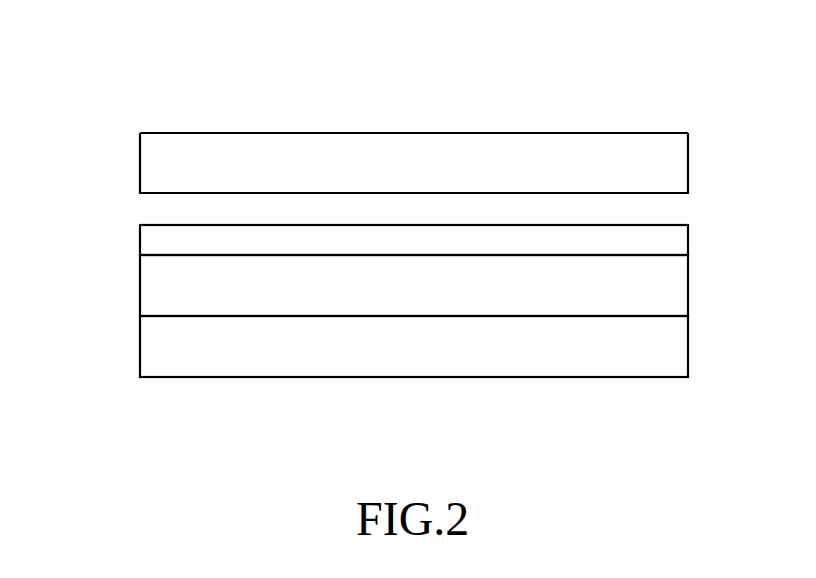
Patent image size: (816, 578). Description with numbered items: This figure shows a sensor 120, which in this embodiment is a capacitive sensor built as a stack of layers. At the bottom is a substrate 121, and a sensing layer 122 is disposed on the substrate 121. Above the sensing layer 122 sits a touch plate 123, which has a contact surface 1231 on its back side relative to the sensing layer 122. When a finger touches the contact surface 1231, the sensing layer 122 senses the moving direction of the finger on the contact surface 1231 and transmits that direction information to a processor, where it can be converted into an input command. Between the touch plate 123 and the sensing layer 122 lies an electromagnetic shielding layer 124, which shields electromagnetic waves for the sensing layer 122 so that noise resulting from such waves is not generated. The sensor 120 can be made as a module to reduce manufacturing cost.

The sensor 120 is at (90, 64).
The substrate 121 is at (150, 347).
The sensing layer 122 is at (150, 292).
The electromagnetic shielding layer 124 is at (150, 239).
The touch plate 123 is at (148, 162).
The contact surface 1231 is at (207, 133).